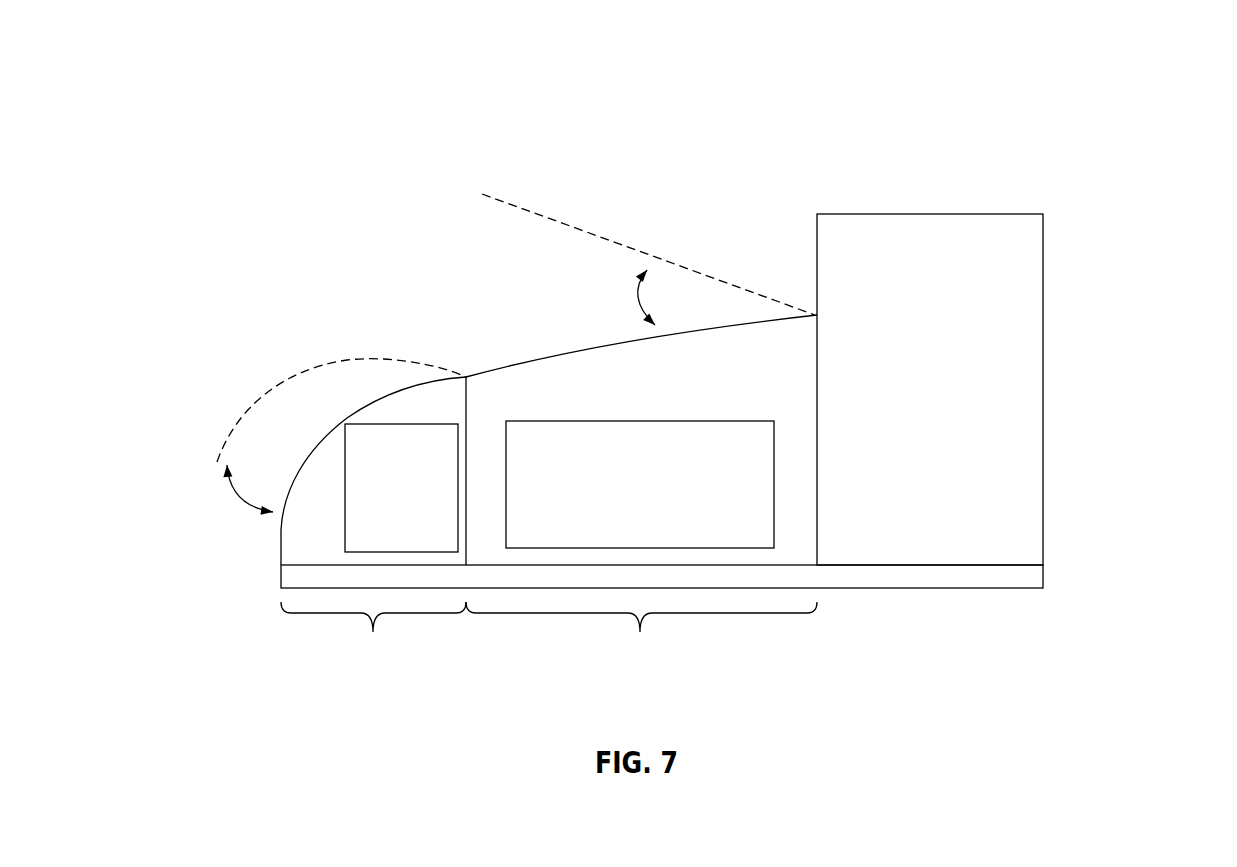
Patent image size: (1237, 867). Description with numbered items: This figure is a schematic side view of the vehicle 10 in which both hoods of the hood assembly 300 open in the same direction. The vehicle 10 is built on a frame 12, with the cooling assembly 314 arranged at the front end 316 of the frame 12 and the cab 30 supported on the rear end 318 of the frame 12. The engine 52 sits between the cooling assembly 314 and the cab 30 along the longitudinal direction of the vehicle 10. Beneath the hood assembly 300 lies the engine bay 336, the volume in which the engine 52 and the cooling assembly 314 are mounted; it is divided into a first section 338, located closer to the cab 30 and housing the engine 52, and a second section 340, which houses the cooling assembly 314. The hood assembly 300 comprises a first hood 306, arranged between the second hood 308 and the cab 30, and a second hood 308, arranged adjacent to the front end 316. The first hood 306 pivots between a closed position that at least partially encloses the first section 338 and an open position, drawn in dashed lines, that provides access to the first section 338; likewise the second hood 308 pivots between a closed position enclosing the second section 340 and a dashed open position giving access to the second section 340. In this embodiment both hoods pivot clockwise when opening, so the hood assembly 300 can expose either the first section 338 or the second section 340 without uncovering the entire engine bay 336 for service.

The vehicle 10 is at (466, 72).
The frame 12 is at (977, 570).
The cab 30 is at (952, 222).
The engine 52 is at (673, 422).
The hood assembly 300 is at (305, 210).
The first hood 306 is at (553, 358).
The second hood 308 is at (281, 548).
The cooling assembly 314 is at (343, 538).
The front end 316 is at (225, 570).
The rear end 318 is at (1106, 480).
The engine bay 336 is at (797, 353).
The first section 338 is at (641, 638).
The second section 340 is at (373, 549).